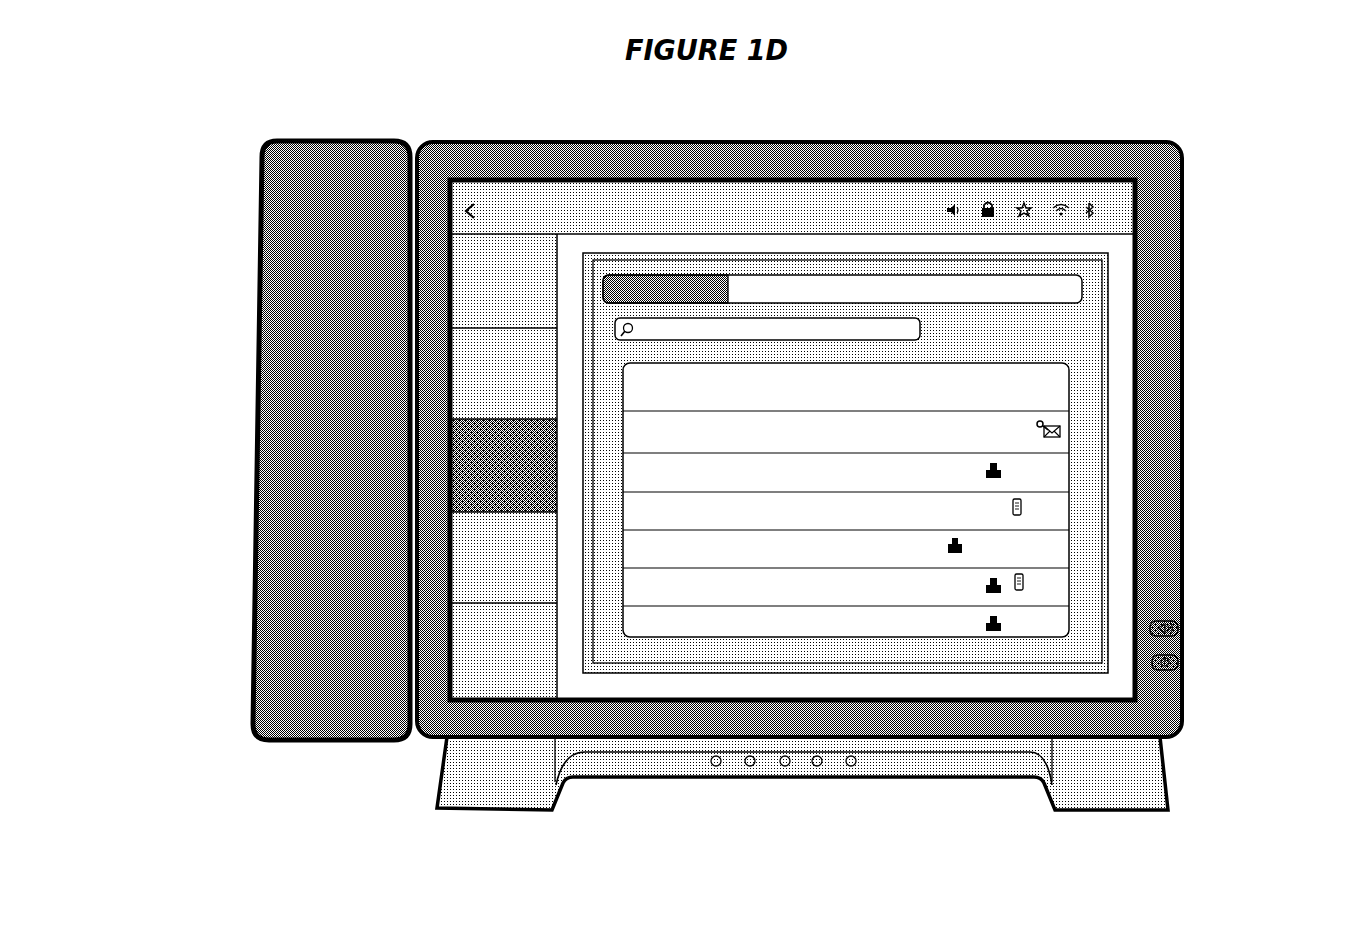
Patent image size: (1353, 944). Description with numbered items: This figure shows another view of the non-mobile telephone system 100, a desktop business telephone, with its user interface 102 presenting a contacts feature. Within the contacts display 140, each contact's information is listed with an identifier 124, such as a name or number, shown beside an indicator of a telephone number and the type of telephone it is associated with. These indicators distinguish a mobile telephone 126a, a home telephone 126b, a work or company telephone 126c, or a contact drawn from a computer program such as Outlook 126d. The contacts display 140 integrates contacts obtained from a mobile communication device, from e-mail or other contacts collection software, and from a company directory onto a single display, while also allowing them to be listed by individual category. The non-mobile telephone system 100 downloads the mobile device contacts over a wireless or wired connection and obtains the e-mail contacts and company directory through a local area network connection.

The non-mobile telephone system 100 is at (206, 150).
The user interface 102 is at (879, 440).
The identifier 124 is at (729, 432).
The mobile telephone type indicator 126a is at (1024, 580).
The home telephone type indicator 126b is at (963, 542).
The work or company telephone type indicator 126c is at (1002, 468).
The computer program contact indicator 126d is at (1062, 429).
The contacts display 140 is at (1095, 627).